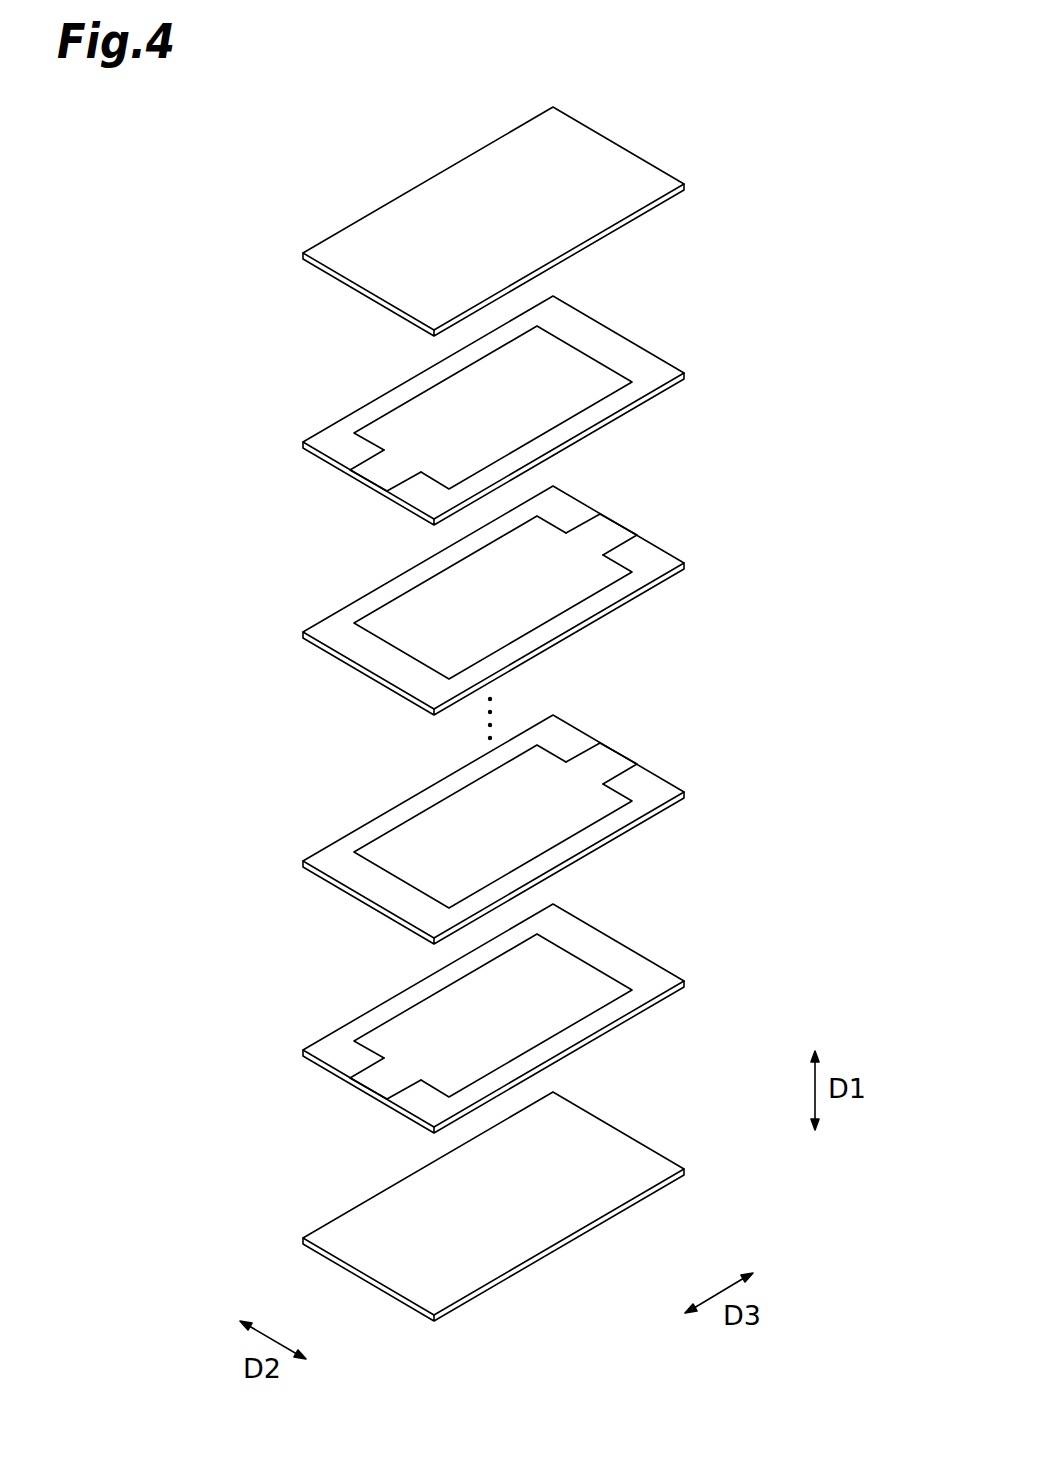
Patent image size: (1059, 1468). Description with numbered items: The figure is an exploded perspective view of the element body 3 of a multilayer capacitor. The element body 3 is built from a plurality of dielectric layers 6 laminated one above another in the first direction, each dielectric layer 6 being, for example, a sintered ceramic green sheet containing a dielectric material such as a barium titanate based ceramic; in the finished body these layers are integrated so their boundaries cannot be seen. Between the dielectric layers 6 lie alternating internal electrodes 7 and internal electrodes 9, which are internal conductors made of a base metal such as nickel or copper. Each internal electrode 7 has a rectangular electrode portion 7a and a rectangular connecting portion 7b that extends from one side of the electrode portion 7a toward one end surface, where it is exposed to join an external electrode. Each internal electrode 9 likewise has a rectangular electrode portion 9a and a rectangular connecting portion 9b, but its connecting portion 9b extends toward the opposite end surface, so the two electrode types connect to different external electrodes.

The element body 3 is at (718, 136).
The dielectric layer 6 is at (337, 233).
The internal electrode 7 is at (497, 711).
The electrode portion 7a is at (582, 377).
The connecting portion 7b is at (380, 468).
The internal electrode 9 is at (524, 687).
The electrode portion 9a is at (415, 618).
The connecting portion 9b is at (615, 538).